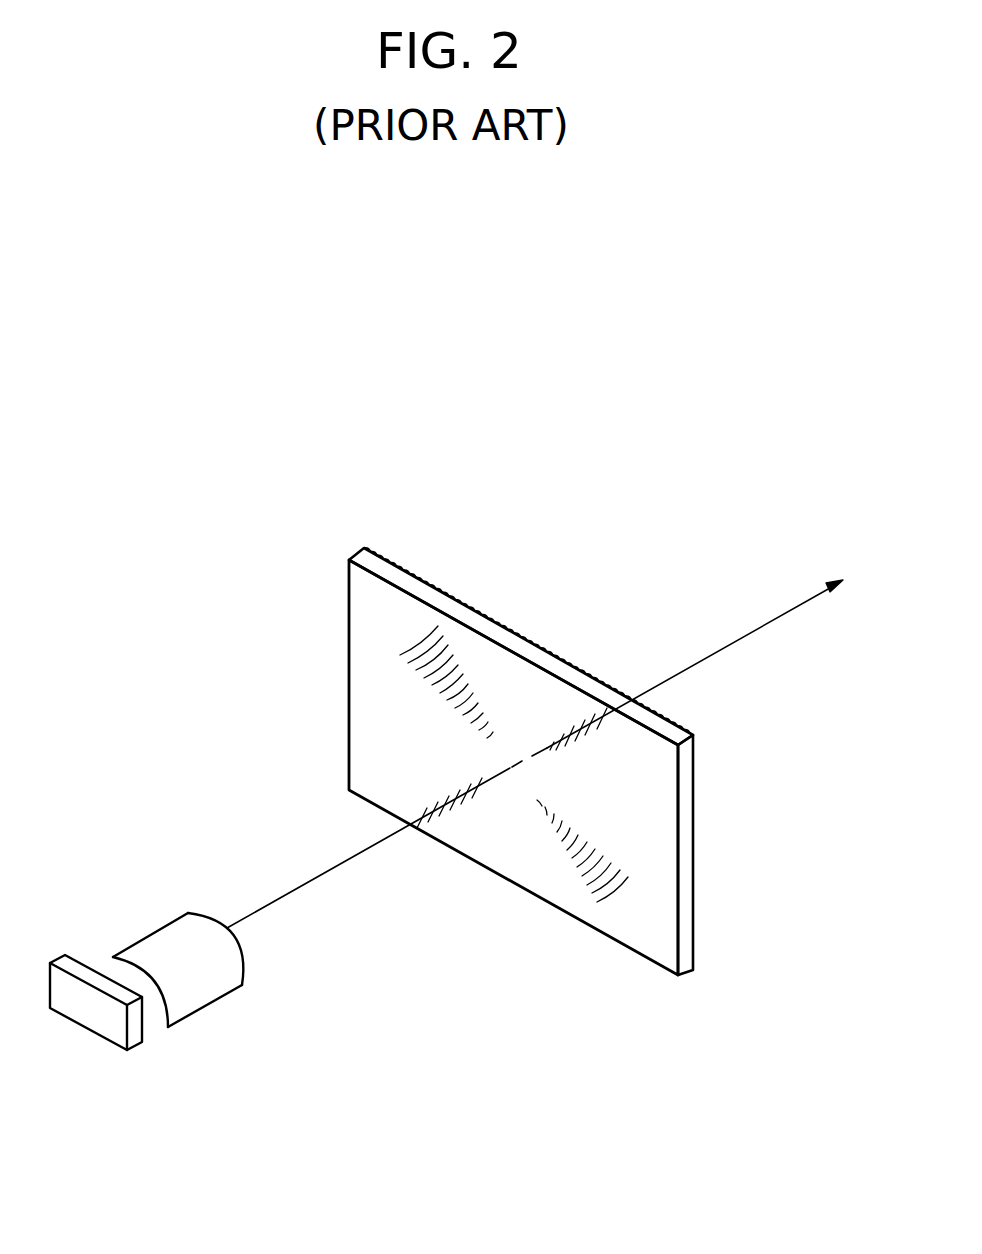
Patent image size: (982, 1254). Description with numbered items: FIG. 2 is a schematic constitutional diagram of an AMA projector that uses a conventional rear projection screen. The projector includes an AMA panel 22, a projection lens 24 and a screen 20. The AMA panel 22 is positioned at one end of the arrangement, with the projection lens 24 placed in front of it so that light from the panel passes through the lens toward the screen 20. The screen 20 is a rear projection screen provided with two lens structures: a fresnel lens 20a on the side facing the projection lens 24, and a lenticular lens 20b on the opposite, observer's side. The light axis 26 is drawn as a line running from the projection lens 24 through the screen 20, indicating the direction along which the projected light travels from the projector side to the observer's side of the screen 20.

The screen 20 is at (480, 809).
The fresnel lens 20a is at (370, 708).
The lenticular lens 20b is at (512, 630).
The AMA panel 22 is at (63, 953).
The projection lens 24 is at (183, 933).
The light axis 26 is at (723, 647).